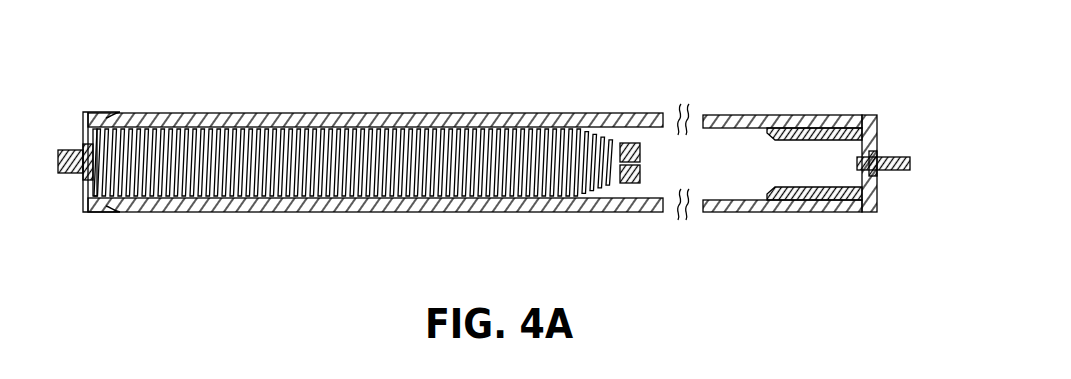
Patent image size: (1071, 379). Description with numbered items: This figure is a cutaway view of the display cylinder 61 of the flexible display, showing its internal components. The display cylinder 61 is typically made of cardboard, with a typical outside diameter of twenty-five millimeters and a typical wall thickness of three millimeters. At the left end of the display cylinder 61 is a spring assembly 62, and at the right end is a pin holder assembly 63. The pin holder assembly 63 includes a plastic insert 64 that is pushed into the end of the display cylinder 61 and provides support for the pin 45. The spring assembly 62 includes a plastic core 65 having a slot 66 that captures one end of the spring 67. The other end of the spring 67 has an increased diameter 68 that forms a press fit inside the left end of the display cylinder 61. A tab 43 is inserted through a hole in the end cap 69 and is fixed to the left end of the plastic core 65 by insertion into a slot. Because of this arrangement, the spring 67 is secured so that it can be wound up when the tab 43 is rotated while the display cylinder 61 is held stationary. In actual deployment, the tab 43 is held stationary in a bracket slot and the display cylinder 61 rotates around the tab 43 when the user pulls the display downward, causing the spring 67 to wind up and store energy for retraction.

The tab 43 is at (63, 150).
The pin 45 is at (896, 157).
The display cylinder 61 is at (813, 115).
The spring assembly 62 is at (160, 262).
The pin holder assembly 63 is at (870, 255).
The plastic insert 64 is at (823, 190).
The plastic core 65 is at (633, 143).
The slot 66 is at (633, 183).
The spring 67 is at (372, 187).
The increased diameter 68 is at (102, 200).
The end cap 69 is at (97, 112).